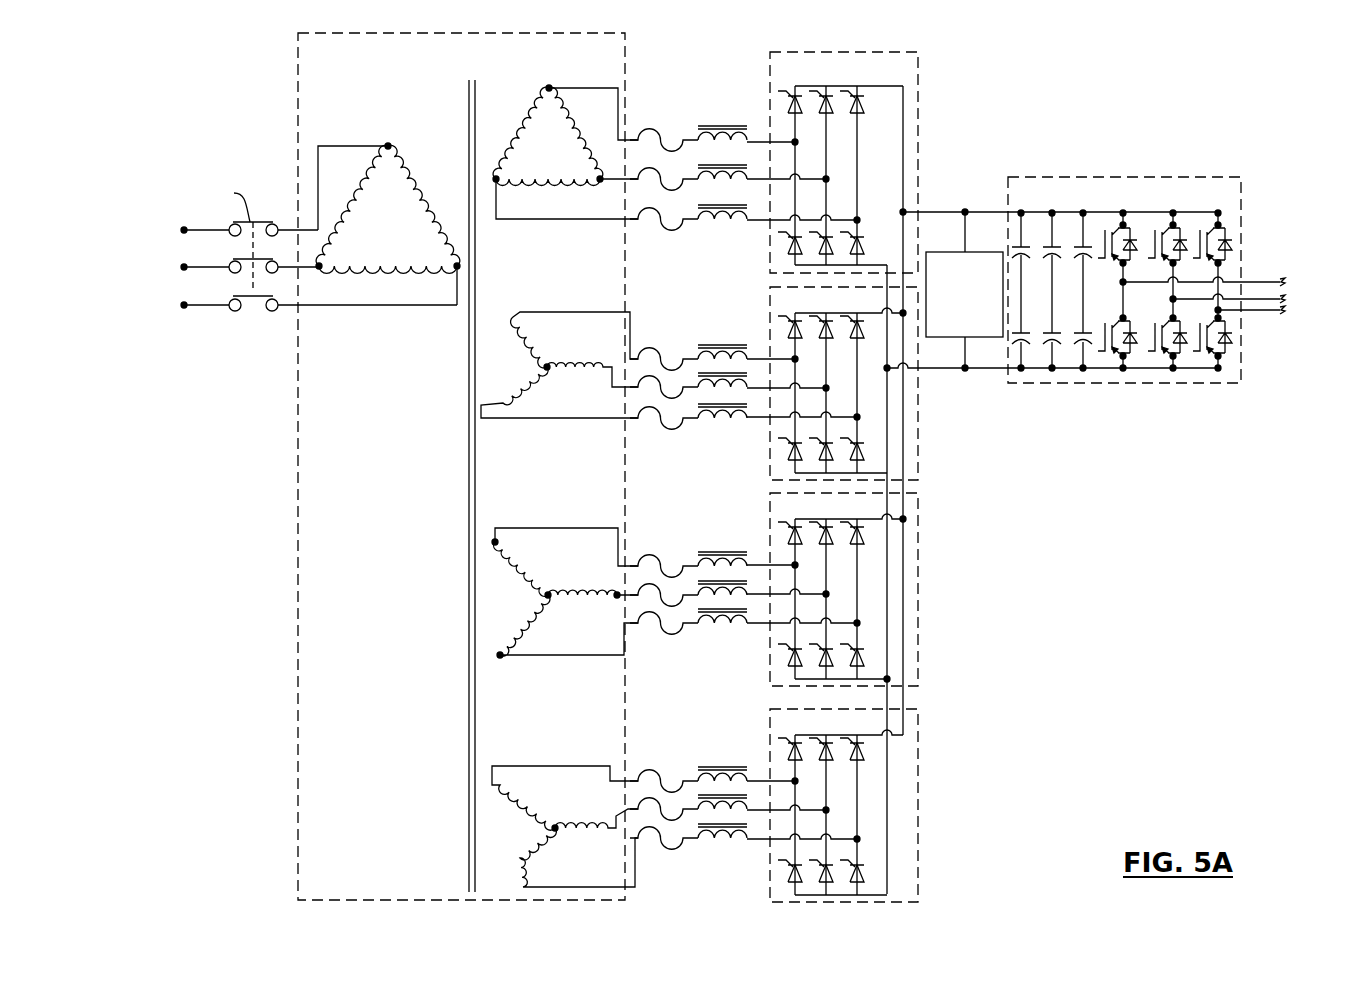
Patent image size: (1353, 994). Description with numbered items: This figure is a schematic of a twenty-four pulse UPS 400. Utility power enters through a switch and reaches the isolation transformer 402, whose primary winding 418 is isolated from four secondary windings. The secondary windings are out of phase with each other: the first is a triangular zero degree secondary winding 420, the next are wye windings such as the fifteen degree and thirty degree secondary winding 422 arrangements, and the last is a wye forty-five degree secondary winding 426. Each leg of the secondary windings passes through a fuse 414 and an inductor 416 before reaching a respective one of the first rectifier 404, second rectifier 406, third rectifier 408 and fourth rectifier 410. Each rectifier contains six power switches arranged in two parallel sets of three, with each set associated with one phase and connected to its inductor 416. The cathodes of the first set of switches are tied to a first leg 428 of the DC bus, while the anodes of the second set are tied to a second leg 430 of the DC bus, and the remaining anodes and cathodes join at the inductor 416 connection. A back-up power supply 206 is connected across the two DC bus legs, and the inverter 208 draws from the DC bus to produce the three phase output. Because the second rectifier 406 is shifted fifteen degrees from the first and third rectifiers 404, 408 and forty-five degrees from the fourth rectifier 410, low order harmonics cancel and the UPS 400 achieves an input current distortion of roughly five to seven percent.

The twenty-four pulse UPS 400 is at (268, 62).
The isolation transformer 402 is at (625, 55).
The first rectifier 404 is at (918, 80).
The second rectifier 406 is at (918, 444).
The third rectifier 408 is at (918, 632).
The fourth rectifier 410 is at (918, 812).
The fuse 414 is at (660, 175).
The inductor 416 is at (720, 125).
The primary winding 418 is at (406, 152).
The first secondary winding 420 is at (552, 88).
The second secondary winding 422 is at (518, 313).
The fourth secondary winding 426 is at (525, 856).
The first leg of DC bus 428 is at (928, 211).
The second leg of DC bus 430 is at (942, 372).
The back-up power supply 206 is at (978, 252).
The inverter 208 is at (1125, 177).